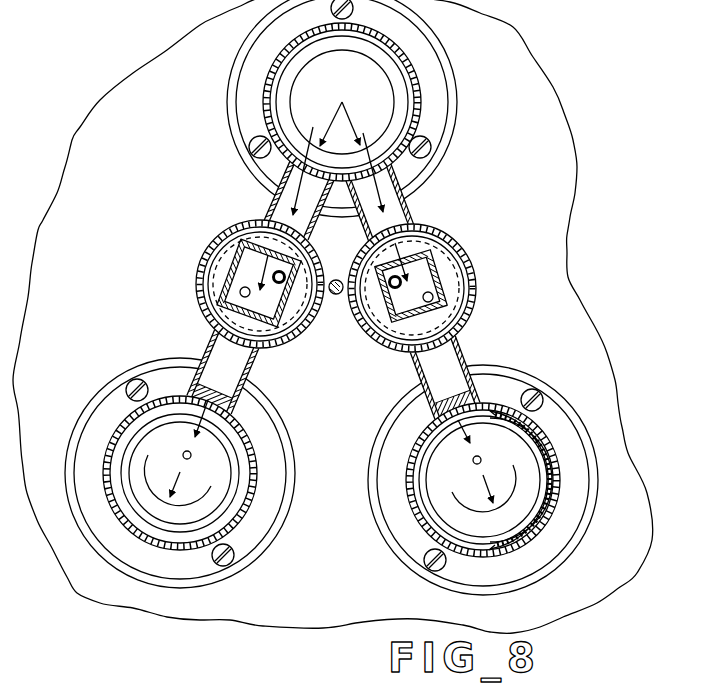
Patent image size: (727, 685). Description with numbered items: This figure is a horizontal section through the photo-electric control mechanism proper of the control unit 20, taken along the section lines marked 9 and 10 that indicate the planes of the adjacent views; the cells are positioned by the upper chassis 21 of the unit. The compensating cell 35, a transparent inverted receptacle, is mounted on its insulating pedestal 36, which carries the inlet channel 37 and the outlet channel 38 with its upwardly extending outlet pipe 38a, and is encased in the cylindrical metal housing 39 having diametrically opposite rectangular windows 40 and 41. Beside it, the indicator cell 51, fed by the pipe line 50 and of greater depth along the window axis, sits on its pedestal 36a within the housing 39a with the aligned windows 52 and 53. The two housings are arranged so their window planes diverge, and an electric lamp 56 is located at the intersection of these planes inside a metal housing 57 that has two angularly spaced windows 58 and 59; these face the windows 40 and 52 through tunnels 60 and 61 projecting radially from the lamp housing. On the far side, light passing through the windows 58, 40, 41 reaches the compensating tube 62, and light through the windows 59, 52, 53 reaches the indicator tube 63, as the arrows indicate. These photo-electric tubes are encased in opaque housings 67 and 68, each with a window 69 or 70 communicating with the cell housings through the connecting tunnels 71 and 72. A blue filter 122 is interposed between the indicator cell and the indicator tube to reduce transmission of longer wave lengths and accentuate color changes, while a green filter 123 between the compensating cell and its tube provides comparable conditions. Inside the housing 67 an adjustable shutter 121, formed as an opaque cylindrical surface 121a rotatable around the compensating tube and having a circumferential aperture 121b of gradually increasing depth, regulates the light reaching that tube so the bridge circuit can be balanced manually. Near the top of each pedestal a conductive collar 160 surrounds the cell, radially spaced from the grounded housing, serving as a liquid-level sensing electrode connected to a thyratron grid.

The control unit 20 is at (558, 100).
The upper chassis 21 is at (514, 136).
The lamp housing 57 is at (400, 55).
The electric lamp 56 is at (372, 85).
The lamp housing window 59 is at (305, 161).
The lamp housing window 58 is at (370, 164).
The tunnel 60 is at (420, 188).
The window 40 is at (402, 216).
The tunnel 61 is at (262, 190).
The collar 160 is at (215, 237).
The window 52 is at (306, 226).
The indicator cell 51 is at (242, 262).
The pedestal 36a is at (212, 270).
The housing 39a is at (215, 295).
The pipe line 50 is at (238, 297).
The window 53 is at (222, 343).
The connecting tunnel 72 is at (253, 373).
The blue filter 122 is at (245, 405).
The housing 39 is at (455, 245).
The inlet channel 37 is at (348, 323).
The compensating cell 35 is at (434, 297).
The pedestal 36 is at (455, 310).
The outlet pipe 38a is at (393, 288).
The outlet channel 38 is at (364, 353).
The window 41 is at (458, 346).
The connecting tunnel 71 is at (480, 362).
The window 69 is at (465, 400).
The green filter 123 is at (437, 402).
The window 70 is at (198, 408).
The indicator tube 63 is at (217, 462).
The housing 68 is at (107, 460).
The compensating tube 62 is at (513, 445).
The housing 67 is at (557, 483).
The adjustable shutter 121 is at (545, 523).
The cylindrical surface 121a is at (550, 448).
The aperture 121b is at (460, 566).
The section line 9 is at (112, 625).
The section line 10 is at (533, 606).